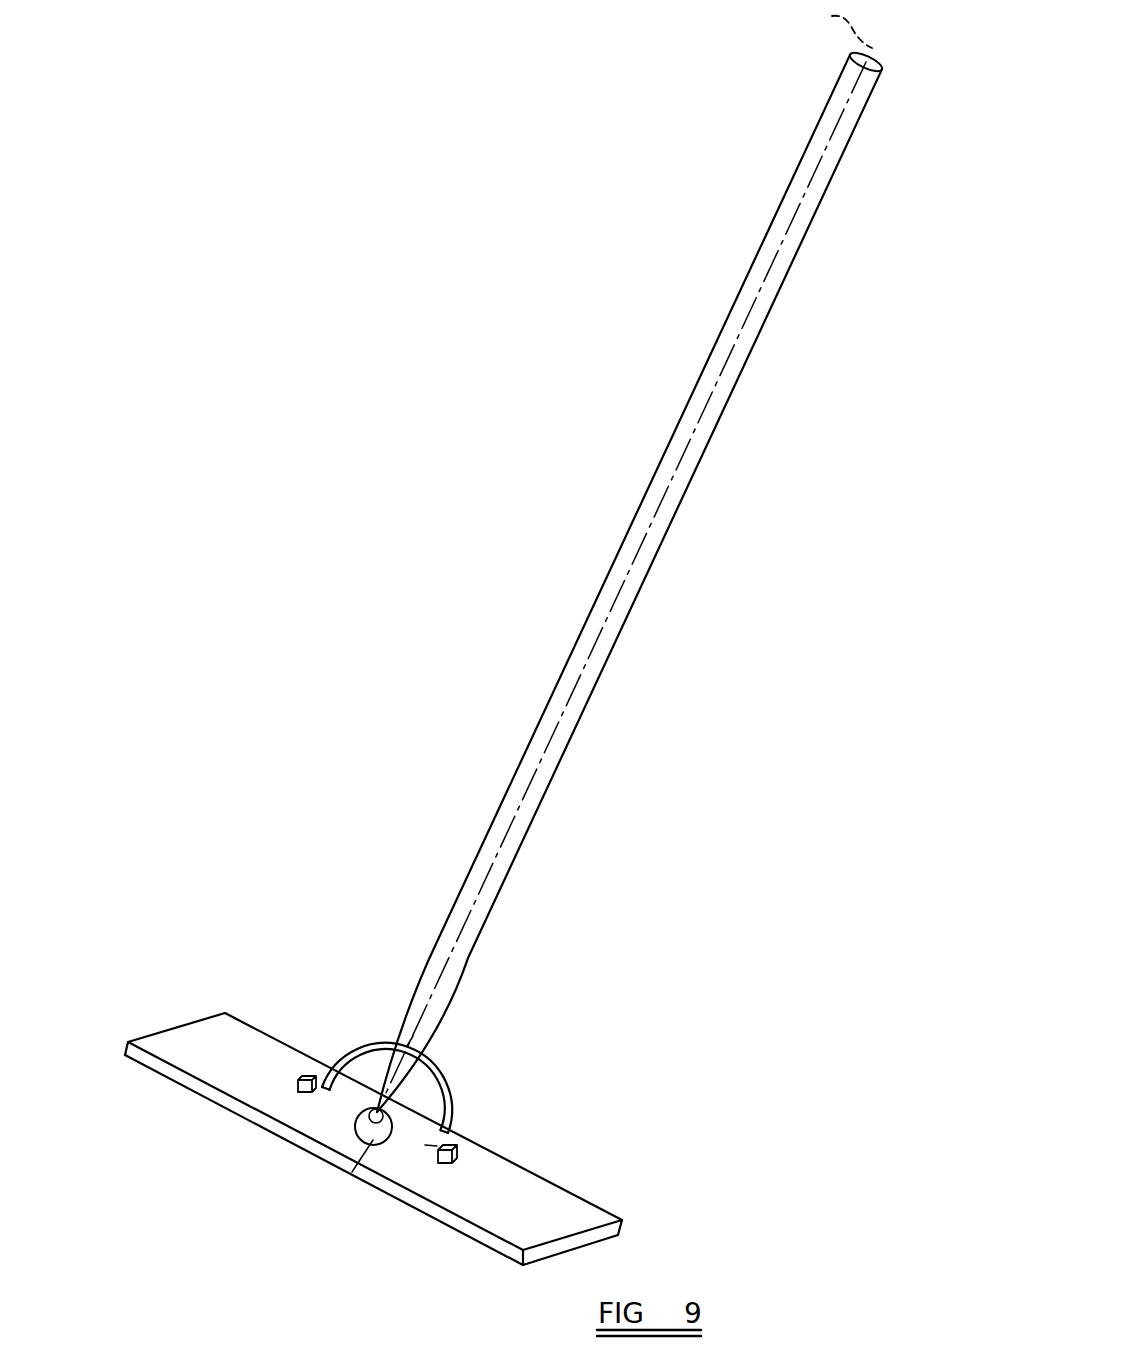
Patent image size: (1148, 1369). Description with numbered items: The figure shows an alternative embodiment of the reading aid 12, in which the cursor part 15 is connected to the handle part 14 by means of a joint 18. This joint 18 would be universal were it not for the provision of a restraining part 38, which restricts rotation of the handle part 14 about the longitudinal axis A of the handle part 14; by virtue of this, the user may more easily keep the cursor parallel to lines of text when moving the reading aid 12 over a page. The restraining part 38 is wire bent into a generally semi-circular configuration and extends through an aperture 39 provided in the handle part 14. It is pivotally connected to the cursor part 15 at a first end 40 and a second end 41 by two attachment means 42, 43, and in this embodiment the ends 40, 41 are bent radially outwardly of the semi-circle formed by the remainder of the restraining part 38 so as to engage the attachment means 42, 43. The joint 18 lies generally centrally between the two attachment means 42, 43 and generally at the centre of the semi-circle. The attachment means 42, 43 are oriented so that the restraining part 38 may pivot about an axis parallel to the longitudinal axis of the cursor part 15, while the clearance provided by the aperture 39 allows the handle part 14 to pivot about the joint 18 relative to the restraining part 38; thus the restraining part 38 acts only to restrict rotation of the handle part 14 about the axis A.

The reading aid 12 is at (668, 1037).
The handle part 14 is at (624, 618).
The cursor part 15 is at (518, 1208).
The joint 18 is at (382, 1152).
The restraining part 38 is at (450, 1096).
The aperture 39 is at (410, 1052).
The first end 40 is at (437, 1146).
The second end 41 is at (330, 1145).
The attachment means 42 is at (458, 1142).
The attachment means 43 is at (310, 1077).
The longitudinal axis A is at (838, 27).